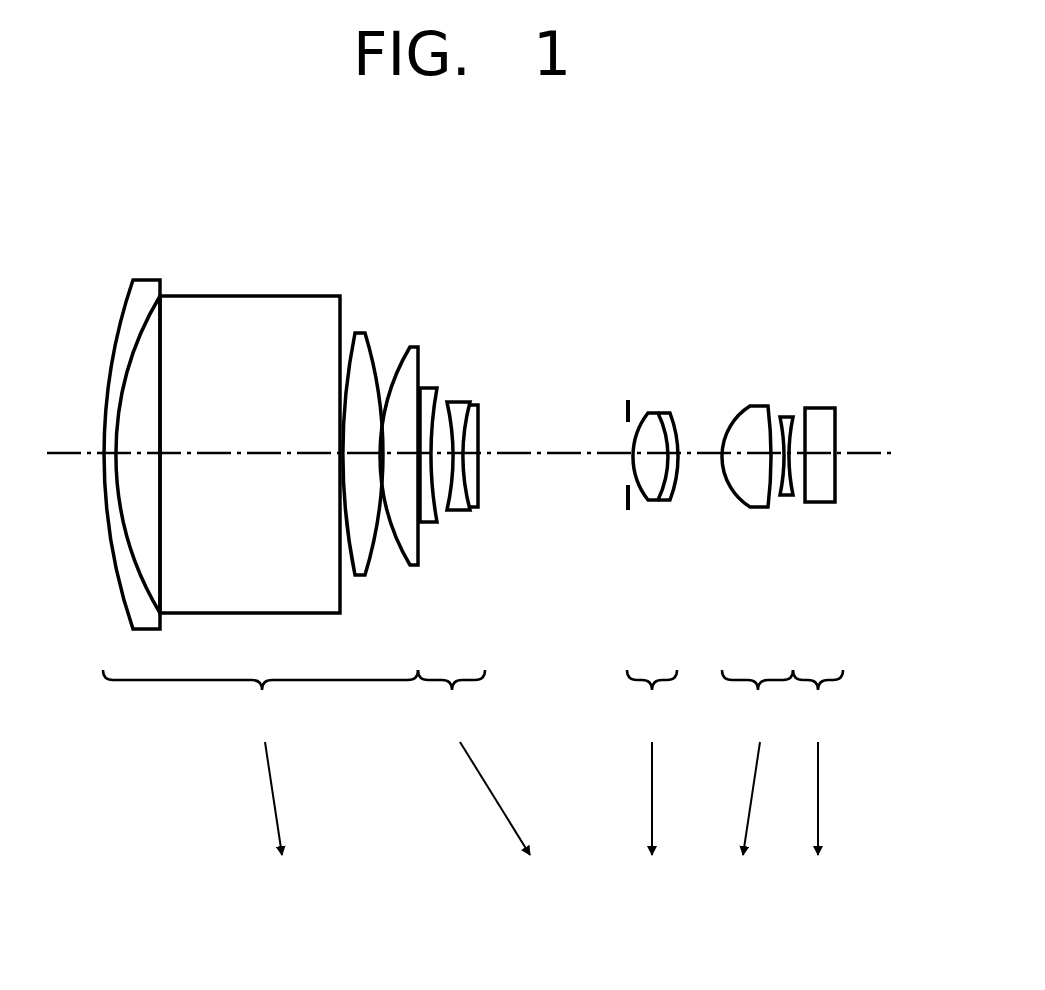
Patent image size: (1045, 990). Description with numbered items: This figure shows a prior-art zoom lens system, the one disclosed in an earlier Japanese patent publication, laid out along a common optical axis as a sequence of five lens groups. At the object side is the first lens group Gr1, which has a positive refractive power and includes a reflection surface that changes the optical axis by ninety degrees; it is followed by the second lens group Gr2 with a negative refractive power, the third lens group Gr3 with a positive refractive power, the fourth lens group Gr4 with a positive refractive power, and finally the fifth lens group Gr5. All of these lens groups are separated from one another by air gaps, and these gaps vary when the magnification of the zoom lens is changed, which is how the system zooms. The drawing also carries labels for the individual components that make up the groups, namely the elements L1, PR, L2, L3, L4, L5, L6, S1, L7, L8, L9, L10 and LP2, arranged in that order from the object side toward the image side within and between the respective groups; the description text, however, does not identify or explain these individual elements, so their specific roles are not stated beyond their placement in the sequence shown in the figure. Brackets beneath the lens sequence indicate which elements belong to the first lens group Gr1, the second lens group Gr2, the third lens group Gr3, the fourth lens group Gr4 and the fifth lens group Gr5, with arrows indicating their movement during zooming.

The first lens L1 is at (150, 287).
The prism PR is at (252, 305).
The second lens L2 is at (361, 332).
The third lens L3 is at (416, 345).
The fourth lens L4 is at (437, 385).
The fifth lens L5 is at (462, 402).
The sixth lens L6 is at (477, 420).
The aperture stop S1 is at (626, 410).
The seventh lens L7 is at (652, 410).
The eighth lens L8 is at (675, 412).
The ninth lens L9 is at (753, 403).
The tenth lens L10 is at (790, 415).
The optical filter / low pass filter LP2 is at (827, 417).
The first lens group Gr1 is at (260, 762).
The second lens group Gr2 is at (474, 762).
The third lens group Gr3 is at (652, 762).
The fourth lens group Gr4 is at (757, 762).
The fifth lens group Gr5 is at (818, 762).